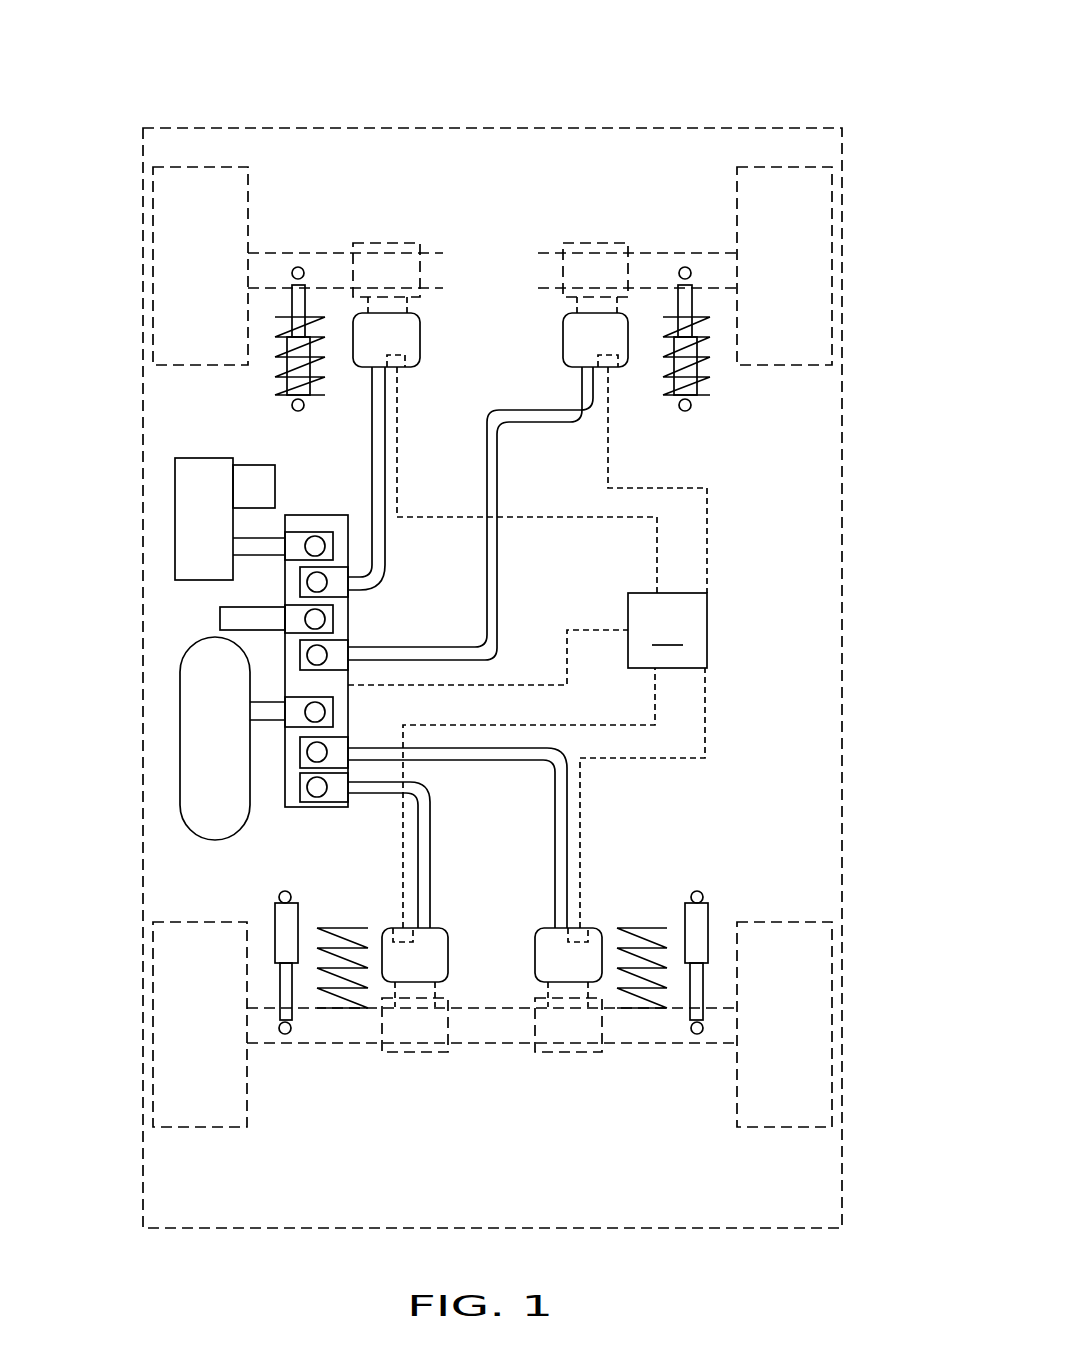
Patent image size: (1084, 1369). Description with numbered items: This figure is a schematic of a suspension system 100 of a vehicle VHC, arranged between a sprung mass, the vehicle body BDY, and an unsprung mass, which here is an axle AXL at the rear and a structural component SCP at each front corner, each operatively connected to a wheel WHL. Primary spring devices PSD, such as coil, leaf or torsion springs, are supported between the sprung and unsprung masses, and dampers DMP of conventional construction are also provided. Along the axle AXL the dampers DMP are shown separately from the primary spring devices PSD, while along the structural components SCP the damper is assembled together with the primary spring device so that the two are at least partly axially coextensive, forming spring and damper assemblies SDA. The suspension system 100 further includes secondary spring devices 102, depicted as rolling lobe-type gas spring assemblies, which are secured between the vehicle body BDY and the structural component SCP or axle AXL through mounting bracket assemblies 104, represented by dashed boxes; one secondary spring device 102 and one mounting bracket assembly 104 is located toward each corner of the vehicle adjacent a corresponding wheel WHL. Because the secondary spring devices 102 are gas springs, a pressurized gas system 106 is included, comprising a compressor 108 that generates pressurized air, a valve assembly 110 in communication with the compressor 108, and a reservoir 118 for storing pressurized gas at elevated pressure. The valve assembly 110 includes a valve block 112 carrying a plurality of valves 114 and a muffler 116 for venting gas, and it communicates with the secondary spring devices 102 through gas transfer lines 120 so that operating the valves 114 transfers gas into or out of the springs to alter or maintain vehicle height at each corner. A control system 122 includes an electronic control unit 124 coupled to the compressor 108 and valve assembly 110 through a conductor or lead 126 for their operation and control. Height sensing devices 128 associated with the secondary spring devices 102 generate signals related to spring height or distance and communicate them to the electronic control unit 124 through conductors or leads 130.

The suspension system 100 is at (812, 476).
The secondary spring device 102 is at (436, 339).
The mounting bracket assembly 104 is at (403, 236).
The pressurized gas system 106 is at (242, 645).
The compressor 108 is at (178, 513).
The valve assembly 110 is at (360, 614).
The valve block 112 is at (322, 807).
The valves 114 is at (320, 654).
The muffler 116 is at (220, 612).
The reservoir 118 is at (195, 740).
The gas transfer lines 120 is at (385, 553).
The control system 122 is at (722, 584).
The electronic control unit 124 is at (667, 630).
The conductor or lead 126 is at (523, 685).
The height sensing device 128 is at (405, 370).
The conductors or leads 130 is at (397, 487).
The vehicle body BDY is at (735, 126).
The vehicle VHC is at (832, 100).
The wheel WHL is at (178, 268).
The damper DMP is at (293, 300).
The structural component SCP is at (333, 255).
The primary spring device PSD is at (275, 365).
The spring and damper assembly SDA is at (266, 411).
The axle AXL is at (497, 1028).